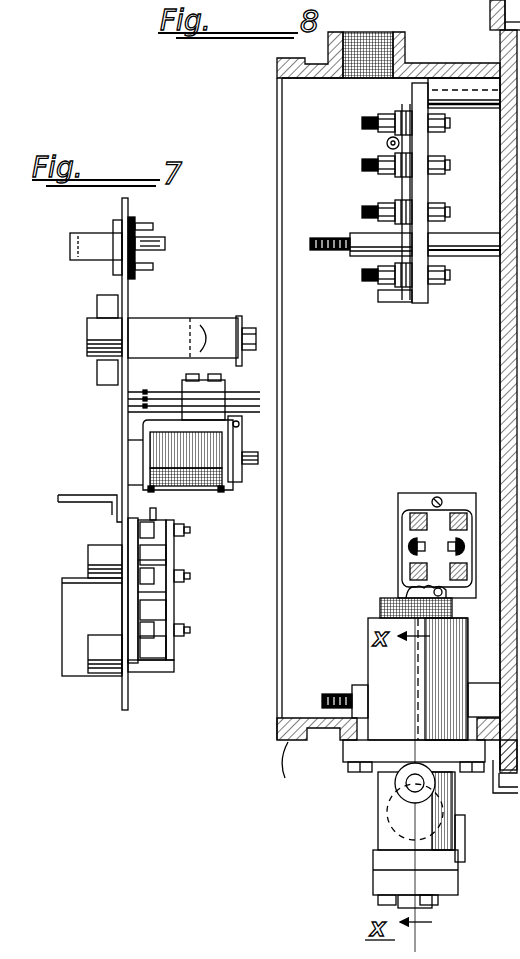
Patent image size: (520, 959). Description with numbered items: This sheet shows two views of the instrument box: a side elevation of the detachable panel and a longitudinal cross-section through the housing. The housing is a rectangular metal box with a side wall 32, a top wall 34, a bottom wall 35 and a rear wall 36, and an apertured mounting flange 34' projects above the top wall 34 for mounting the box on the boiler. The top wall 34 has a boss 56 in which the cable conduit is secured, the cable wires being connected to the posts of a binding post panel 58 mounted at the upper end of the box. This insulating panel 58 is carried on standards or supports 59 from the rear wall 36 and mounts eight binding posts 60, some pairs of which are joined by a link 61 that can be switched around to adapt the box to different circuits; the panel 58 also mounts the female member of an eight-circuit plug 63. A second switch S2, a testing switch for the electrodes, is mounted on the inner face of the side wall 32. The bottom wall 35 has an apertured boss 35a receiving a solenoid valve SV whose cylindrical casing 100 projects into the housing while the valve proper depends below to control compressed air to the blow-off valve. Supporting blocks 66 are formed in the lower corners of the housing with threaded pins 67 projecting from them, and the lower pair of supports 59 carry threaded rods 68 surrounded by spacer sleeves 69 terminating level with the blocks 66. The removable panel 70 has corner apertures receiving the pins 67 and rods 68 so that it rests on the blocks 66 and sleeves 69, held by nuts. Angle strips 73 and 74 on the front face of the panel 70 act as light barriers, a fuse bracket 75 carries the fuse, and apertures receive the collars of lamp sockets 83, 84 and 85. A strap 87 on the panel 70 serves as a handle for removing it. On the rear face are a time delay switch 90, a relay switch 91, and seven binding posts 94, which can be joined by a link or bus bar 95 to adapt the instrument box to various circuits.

In FIG. 7, the removable panel 70 is at (125, 708).
In FIG. 7, the eight-circuit plug 63 is at (135, 222).
In FIG. 8, the eight-circuit plug 63 is at (384, 298).
In FIG. 7, the strap 87 is at (94, 250).
In FIG. 7, the lamp socket 83 is at (97, 343).
In FIG. 7, the fuse bracket 75 is at (114, 392).
In FIG. 7, the time delay switch 90 is at (168, 334).
In FIG. 7, the relay switch 91 is at (222, 492).
In FIG. 7, the angle strip 74 is at (73, 500).
In FIG. 7, the lamp socket 84 is at (98, 562).
In FIG. 7, the angle strip 73 is at (68, 665).
In FIG. 7, the lamp socket 85 is at (105, 665).
In FIG. 7, the link or bus bar 95 is at (238, 566).
In FIG. 7, the binding post 94 is at (180, 624).
In FIG. 8, the side wall 32 is at (290, 576).
In FIG. 8, the top wall 34 is at (388, 54).
In FIG. 8, the apertured mounting flange 34' is at (486, 385).
In FIG. 8, the boss 56 is at (385, 40).
In FIG. 8, the rear wall 36 is at (500, 340).
In FIG. 8, the binding post panel 58 is at (424, 300).
In FIG. 8, the standard or support 59 is at (483, 108).
In FIG. 8, the threaded rod 68 is at (324, 240).
In FIG. 8, the spacer sleeve 69 is at (372, 258).
In FIG. 8, the binding post 60 is at (377, 128).
In FIG. 8, the link 61 is at (400, 106).
In FIG. 8, the second switch S2 is at (410, 512).
In FIG. 8, the cylindrical casing 100 is at (370, 620).
In FIG. 8, the supporting block 66 is at (358, 692).
In FIG. 8, the threaded pin 67 is at (336, 699).
In FIG. 8, the apertured boss 35a is at (348, 738).
In FIG. 8, the bottom wall 35 is at (512, 786).
In FIG. 8, the solenoid valve SV is at (390, 812).